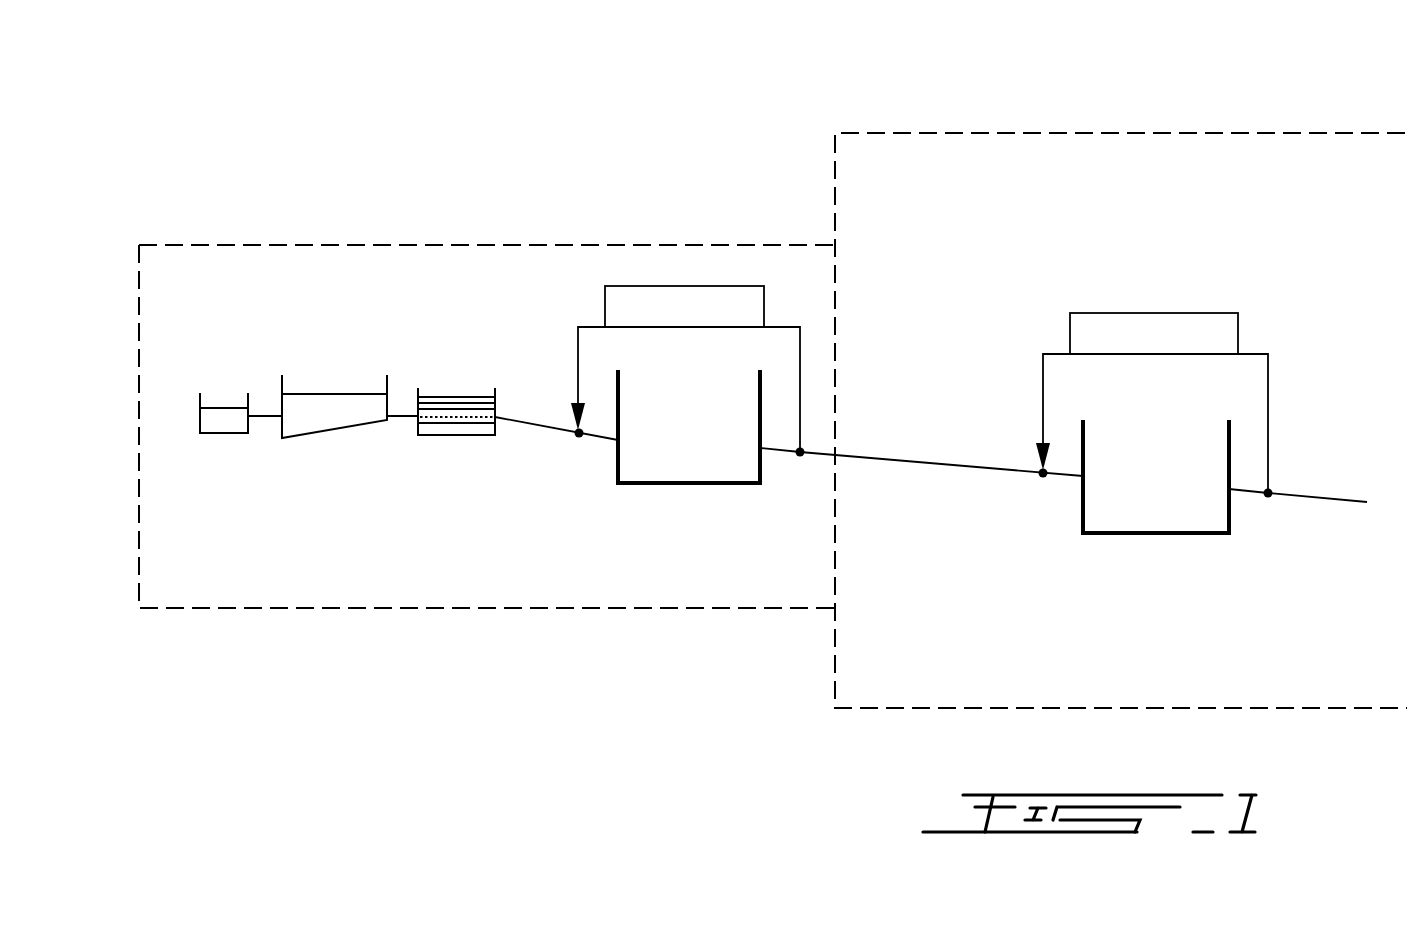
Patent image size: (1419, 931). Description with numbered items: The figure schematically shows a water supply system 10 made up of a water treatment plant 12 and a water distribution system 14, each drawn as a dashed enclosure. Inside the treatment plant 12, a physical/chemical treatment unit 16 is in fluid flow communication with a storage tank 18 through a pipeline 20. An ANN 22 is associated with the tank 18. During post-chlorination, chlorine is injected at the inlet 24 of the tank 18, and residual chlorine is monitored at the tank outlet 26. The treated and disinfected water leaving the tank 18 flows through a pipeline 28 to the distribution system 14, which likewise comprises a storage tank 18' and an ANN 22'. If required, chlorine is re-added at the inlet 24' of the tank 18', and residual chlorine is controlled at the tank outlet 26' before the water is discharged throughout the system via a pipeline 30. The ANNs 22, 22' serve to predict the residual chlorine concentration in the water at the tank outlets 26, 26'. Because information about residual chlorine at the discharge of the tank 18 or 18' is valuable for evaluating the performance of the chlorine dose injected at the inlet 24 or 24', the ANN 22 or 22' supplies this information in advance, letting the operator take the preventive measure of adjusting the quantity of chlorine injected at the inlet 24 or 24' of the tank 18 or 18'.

The water supply system 10 is at (730, 156).
The water treatment plant 12 is at (418, 622).
The water distribution system 14 is at (1045, 121).
The physical/chemical treatment unit 16 is at (352, 350).
The storage tank 18 is at (689, 464).
The storage tank 18' is at (1156, 506).
The pipeline 20 is at (527, 420).
The ANN 22 is at (689, 323).
The ANN 22' is at (1182, 367).
The inlet 24 is at (549, 467).
The inlet 24' is at (1023, 499).
The tank outlet 26 is at (788, 491).
The tank outlet 26' is at (1280, 533).
The pipeline 28 is at (963, 465).
The pipeline 30 is at (1322, 488).